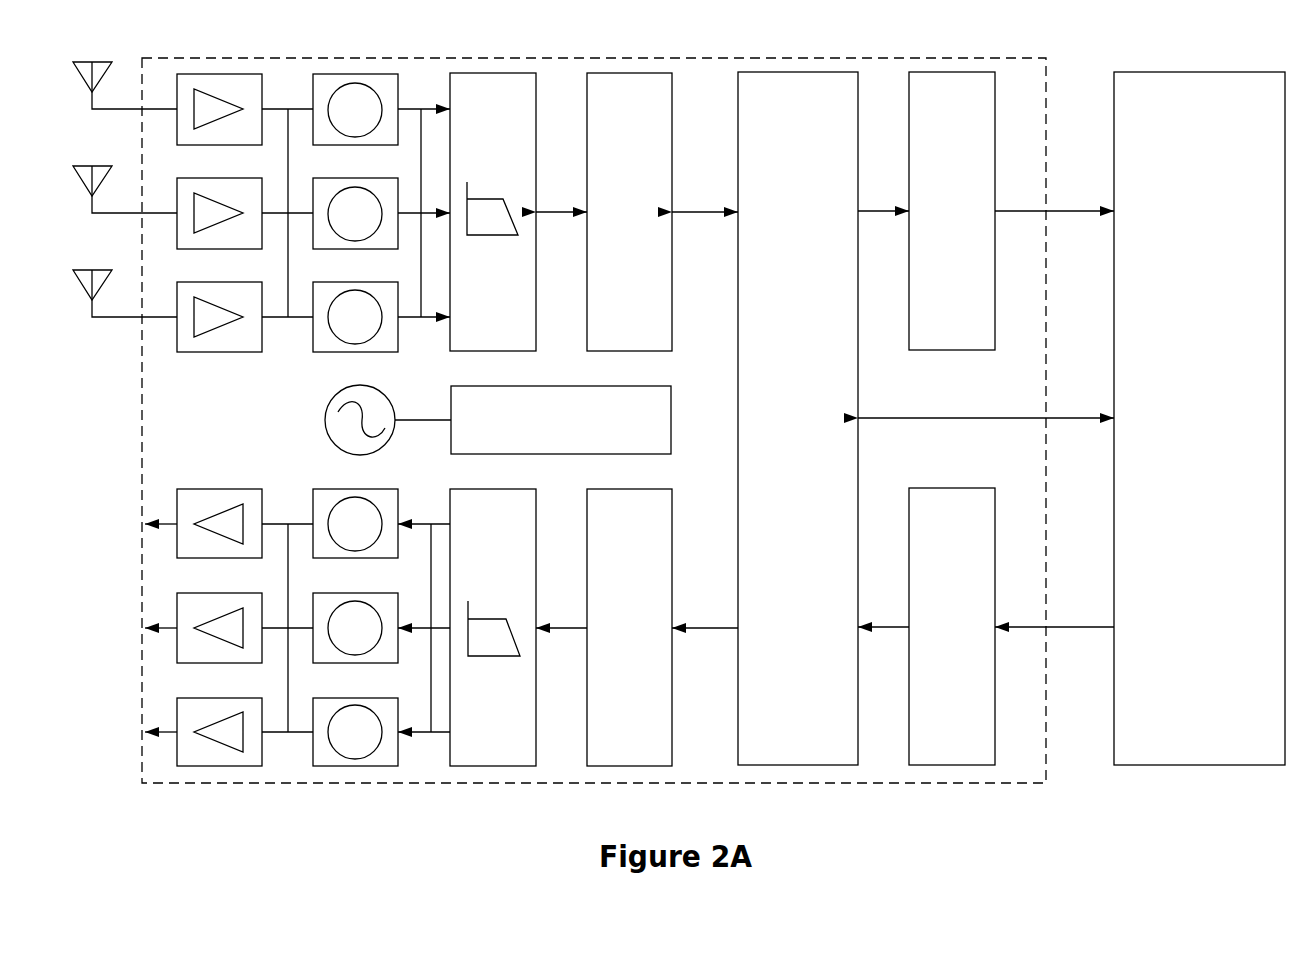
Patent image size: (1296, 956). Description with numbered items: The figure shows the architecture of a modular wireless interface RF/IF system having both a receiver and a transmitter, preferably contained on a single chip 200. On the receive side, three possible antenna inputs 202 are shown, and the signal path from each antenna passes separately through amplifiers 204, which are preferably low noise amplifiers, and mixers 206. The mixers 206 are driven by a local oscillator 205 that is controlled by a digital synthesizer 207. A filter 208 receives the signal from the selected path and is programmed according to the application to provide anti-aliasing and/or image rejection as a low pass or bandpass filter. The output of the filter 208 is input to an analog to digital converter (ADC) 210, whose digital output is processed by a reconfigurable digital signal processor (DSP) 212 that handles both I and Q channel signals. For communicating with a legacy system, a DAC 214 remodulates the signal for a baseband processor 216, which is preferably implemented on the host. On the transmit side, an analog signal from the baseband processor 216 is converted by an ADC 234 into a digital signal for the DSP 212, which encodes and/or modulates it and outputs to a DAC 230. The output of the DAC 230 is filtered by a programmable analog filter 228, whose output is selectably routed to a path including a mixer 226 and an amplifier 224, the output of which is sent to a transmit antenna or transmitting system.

The single chip 200 is at (142, 455).
The antenna inputs 202 is at (92, 62).
The amplifiers 204 is at (220, 74).
The local oscillator 205 is at (327, 440).
The mixers 206 is at (355, 74).
The digital synthesizer 207 is at (451, 412).
The filter 208 is at (493, 73).
The analog to digital converter 210 is at (630, 73).
The digital signal processor 212 is at (802, 72).
The DAC 214 is at (953, 72).
The baseband processor 216 is at (1200, 72).
The amplifier 224 is at (222, 766).
The mixer 226 is at (357, 766).
The programmable analog filter 228 is at (495, 766).
The DAC 230 is at (632, 766).
The ADC 234 is at (957, 766).